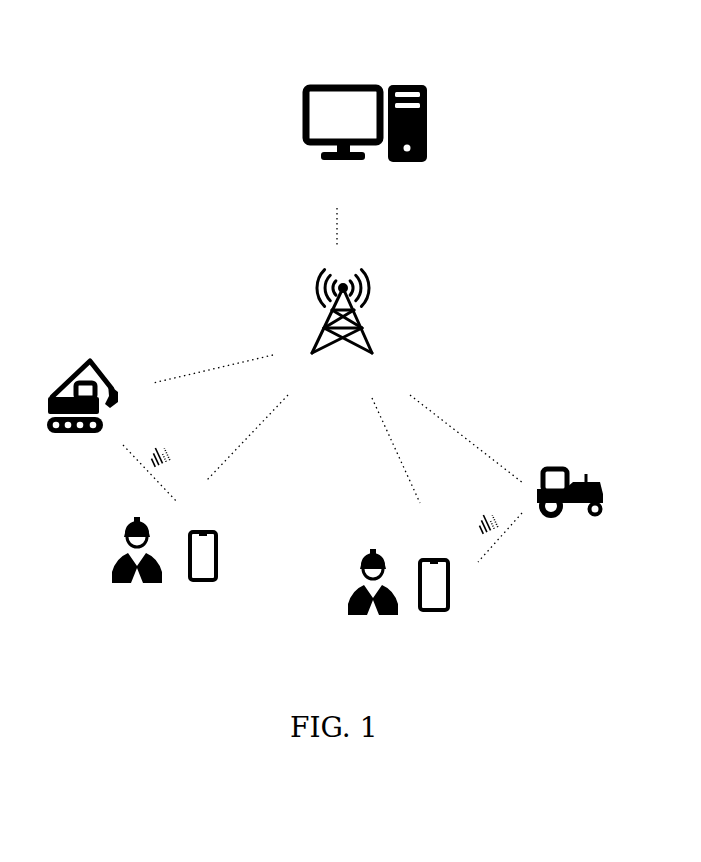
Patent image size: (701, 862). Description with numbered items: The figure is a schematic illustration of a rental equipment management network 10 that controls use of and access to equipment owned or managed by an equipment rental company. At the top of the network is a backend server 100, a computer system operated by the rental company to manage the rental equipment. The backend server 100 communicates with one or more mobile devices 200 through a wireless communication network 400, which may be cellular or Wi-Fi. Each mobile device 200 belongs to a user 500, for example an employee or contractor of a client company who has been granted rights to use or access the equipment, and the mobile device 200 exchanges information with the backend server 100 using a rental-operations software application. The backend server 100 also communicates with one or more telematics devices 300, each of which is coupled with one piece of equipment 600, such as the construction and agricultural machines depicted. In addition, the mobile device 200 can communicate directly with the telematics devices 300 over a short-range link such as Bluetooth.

The rental equipment management network 10 is at (174, 35).
The backend server 100 is at (366, 146).
The mobile device 200 is at (318, 590).
The telematics device 300 is at (77, 424).
The wireless communication network 400 is at (342, 336).
The user 500 is at (255, 582).
The equipment 600 is at (570, 506).